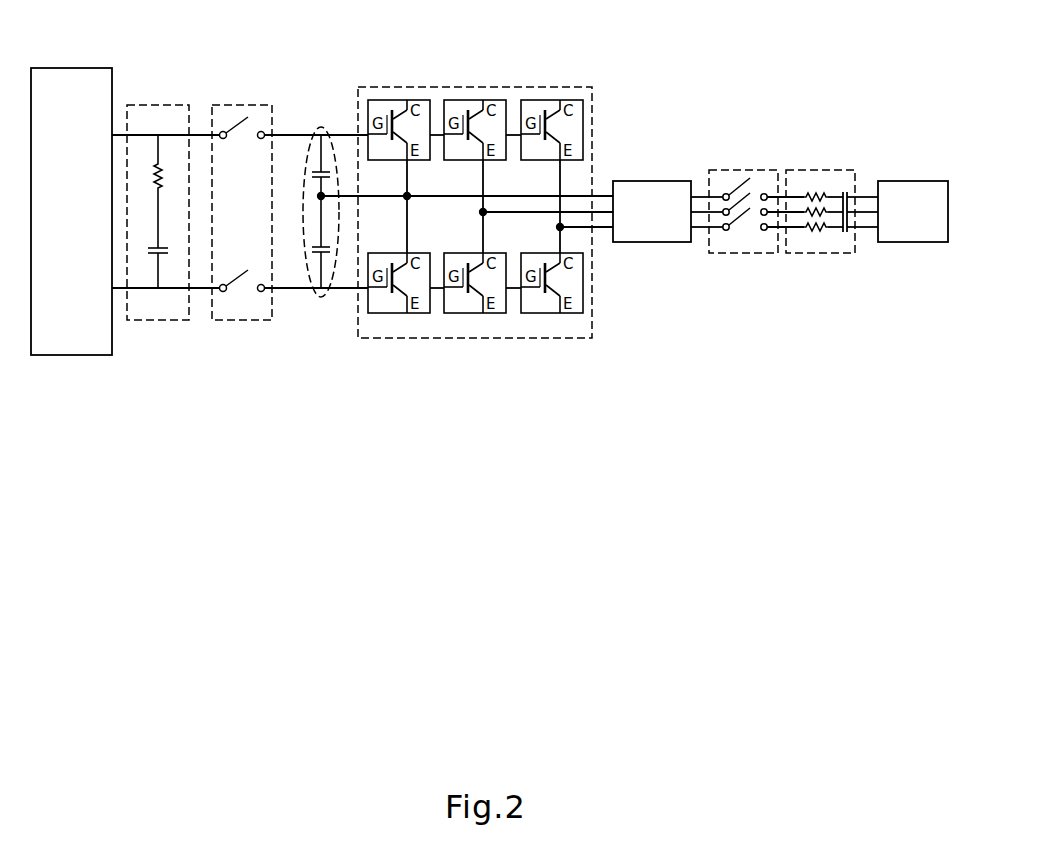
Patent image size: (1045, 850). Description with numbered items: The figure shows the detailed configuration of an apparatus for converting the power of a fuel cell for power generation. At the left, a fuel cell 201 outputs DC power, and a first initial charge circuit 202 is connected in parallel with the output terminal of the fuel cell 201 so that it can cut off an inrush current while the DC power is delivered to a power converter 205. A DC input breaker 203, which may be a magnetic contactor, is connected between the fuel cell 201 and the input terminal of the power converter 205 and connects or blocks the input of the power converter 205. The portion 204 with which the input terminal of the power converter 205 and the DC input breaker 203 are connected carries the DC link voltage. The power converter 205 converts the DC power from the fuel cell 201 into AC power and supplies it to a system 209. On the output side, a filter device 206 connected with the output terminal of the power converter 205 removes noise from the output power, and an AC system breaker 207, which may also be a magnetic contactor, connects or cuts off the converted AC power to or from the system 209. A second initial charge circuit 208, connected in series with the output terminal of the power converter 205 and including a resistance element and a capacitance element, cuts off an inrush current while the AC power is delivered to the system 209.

The fuel cell 201 is at (70, 67).
The first initial charge circuit 202 is at (158, 104).
The DC input breaker 203 is at (241, 104).
The portion (DC link) 204 is at (321, 126).
The power converter 205 is at (475, 86).
The filter device 206 is at (652, 180).
The AC system breaker 207 is at (742, 169).
The second initial charge circuit 208 is at (819, 169).
The system 209 is at (912, 180).